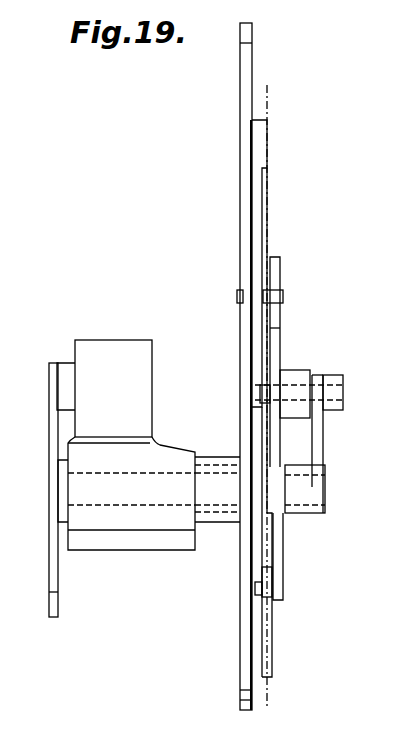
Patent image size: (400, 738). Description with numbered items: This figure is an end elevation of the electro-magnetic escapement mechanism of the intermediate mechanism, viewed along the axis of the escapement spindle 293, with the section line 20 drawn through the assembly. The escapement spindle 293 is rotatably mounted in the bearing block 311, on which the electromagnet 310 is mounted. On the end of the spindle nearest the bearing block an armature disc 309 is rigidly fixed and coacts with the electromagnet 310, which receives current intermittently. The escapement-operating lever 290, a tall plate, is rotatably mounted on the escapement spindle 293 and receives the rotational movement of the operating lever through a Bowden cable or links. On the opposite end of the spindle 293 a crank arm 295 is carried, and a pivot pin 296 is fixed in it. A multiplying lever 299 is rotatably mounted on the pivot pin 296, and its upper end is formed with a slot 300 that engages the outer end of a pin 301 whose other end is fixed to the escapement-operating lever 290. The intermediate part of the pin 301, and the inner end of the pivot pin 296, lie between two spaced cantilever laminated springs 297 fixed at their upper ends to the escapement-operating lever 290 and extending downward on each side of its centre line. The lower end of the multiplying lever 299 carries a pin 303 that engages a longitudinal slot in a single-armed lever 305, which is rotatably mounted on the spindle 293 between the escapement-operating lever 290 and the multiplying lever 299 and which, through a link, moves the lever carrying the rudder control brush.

The section line 20- 20 is at (281, 82).
The escapement-operating lever 290 is at (252, 52).
The escapement spindle 293 is at (325, 492).
The crank arm 295 is at (325, 440).
The pivot pin 296 is at (343, 392).
The cantilever laminated springs 297 is at (262, 190).
The multiplying lever 299 is at (283, 558).
The slot 300 is at (280, 272).
The pin 301 is at (284, 298).
The pin 303 is at (256, 587).
The single-armed lever 305 is at (260, 558).
The armature disc 309 is at (49, 557).
The electromagnet 310 is at (104, 388).
The bearing block 311 is at (126, 493).